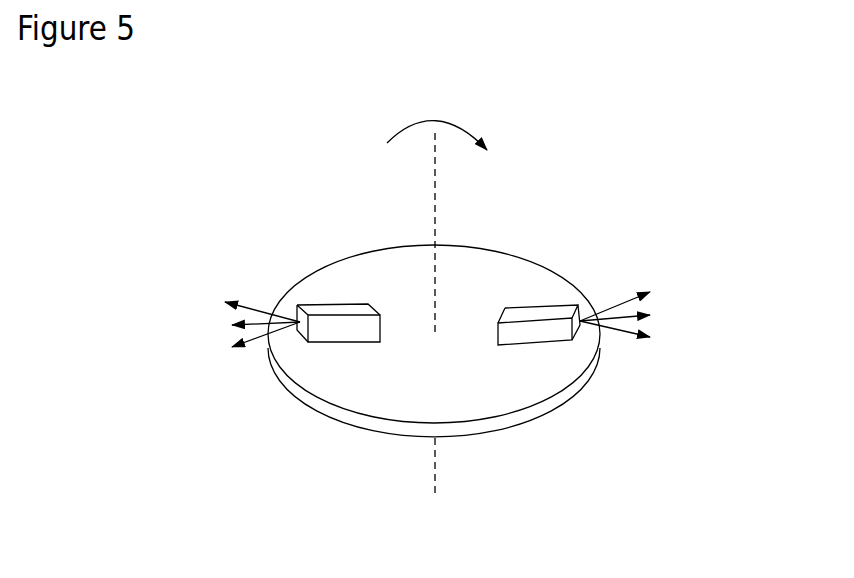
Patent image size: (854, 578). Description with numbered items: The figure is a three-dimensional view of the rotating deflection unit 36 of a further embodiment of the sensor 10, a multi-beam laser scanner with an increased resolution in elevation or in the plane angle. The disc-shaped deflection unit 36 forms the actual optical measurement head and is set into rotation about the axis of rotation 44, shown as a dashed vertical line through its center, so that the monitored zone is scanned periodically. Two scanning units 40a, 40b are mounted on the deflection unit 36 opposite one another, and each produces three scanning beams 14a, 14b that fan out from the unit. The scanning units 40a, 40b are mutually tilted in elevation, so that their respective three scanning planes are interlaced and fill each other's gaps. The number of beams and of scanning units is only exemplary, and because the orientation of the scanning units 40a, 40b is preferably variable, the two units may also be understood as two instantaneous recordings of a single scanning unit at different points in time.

The sensor 10 is at (652, 185).
The scanning beams 14a is at (232, 328).
The scanning beams 14b is at (653, 317).
The deflection unit 36 is at (477, 393).
The scanning unit 40a is at (332, 309).
The scanning unit 40b is at (533, 322).
The axis of rotation 44 is at (435, 192).